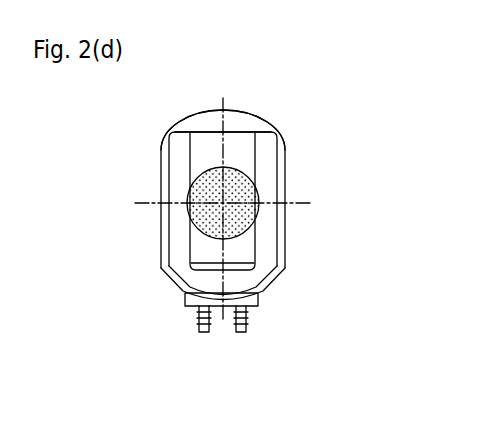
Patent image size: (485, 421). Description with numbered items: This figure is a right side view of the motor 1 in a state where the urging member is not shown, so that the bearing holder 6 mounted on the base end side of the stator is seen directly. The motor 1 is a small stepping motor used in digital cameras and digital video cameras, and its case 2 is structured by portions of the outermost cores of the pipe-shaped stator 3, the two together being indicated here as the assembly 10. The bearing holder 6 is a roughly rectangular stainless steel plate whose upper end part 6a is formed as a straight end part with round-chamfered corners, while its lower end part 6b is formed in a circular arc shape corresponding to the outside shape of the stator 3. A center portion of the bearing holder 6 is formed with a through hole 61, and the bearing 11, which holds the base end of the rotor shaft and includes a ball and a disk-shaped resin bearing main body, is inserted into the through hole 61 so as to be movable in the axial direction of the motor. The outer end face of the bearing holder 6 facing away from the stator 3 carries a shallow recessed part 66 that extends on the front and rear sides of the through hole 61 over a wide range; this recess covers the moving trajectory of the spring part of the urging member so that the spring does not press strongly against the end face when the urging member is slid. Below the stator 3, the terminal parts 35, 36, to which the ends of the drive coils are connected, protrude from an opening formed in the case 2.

The motor 1 is at (293, 89).
The sensor unit 10 is at (268, 48).
The bearing holder 6 is at (180, 145).
The upper end part 6a is at (262, 140).
The lower end part 6b is at (252, 285).
The case 2 is at (223, 103).
The stator 3 is at (236, 112).
The through hole 61 is at (188, 200).
The recessed part 66 is at (248, 246).
The bearing 11 is at (248, 186).
The terminal part 35 is at (219, 341).
The terminal part 36 is at (241, 333).